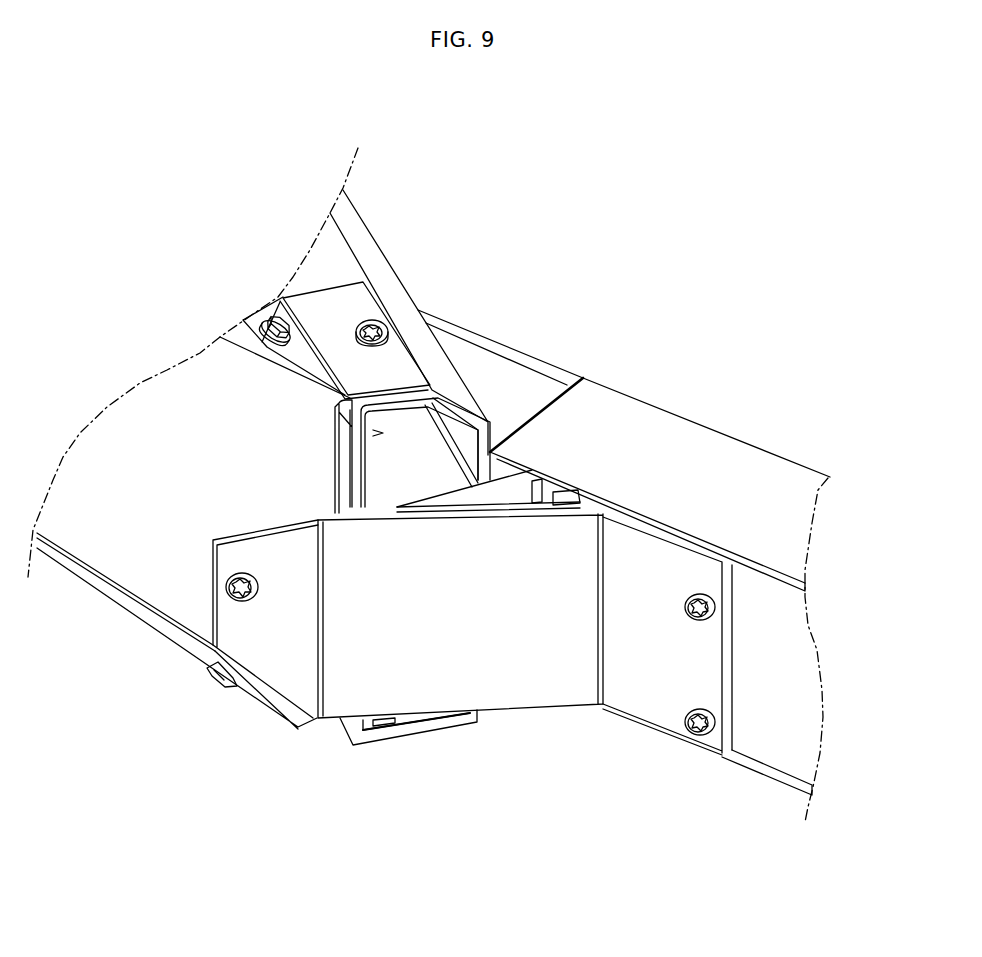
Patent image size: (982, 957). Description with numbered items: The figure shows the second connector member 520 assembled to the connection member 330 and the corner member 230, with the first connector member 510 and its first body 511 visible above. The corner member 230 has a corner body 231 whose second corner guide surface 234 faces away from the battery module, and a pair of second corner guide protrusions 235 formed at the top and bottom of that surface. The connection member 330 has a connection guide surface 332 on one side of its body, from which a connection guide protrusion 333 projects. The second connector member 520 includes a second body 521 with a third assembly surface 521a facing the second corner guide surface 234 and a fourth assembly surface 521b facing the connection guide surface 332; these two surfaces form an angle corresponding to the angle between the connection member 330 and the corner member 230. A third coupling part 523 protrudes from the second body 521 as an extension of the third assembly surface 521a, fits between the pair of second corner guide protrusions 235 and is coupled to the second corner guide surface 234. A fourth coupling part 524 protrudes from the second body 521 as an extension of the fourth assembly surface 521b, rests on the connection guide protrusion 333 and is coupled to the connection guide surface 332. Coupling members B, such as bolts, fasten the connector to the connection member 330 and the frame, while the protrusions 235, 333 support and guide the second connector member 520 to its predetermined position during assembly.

The first connector member 510 is at (513, 215).
The first body 511 is at (470, 333).
The corner member 230 is at (688, 302).
The corner body 231 is at (650, 447).
The second corner guide surface 234 is at (778, 655).
The second corner guide protrusion 235 is at (772, 573).
The second connector member 520 is at (453, 811).
The second body 521 is at (455, 663).
The third assembly surface 521a is at (575, 480).
The fourth assembly surface 521b is at (437, 493).
The third coupling part 523 is at (663, 693).
The fourth coupling part 524 is at (280, 660).
The connection member 330 is at (67, 656).
The connection guide surface 332 is at (130, 537).
The connection guide protrusion 333 is at (158, 623).
The coupling member B is at (697, 594).